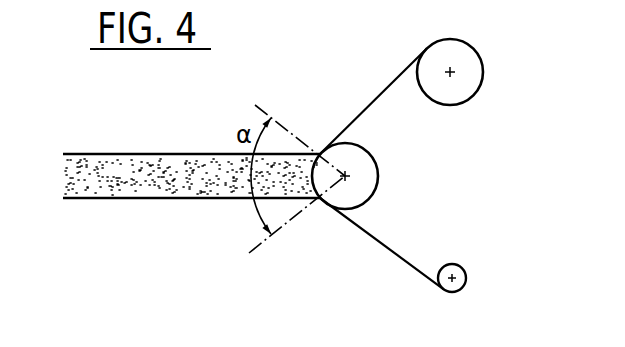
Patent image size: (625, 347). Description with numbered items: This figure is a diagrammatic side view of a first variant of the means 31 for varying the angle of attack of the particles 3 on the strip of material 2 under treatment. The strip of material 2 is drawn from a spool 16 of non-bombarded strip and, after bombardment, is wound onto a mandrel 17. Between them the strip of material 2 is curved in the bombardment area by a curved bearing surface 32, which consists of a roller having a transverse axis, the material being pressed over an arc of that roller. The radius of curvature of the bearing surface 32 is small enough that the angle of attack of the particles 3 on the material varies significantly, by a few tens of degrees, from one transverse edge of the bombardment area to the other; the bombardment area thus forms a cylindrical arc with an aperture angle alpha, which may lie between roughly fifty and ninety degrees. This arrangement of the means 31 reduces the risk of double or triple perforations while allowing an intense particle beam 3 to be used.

The strip of material 2 is at (386, 88).
The particles 3 is at (113, 172).
The spool 16 is at (473, 60).
The mandrel 17 is at (466, 274).
The means for varying the angle of attack 31 is at (313, 118).
The curved bearing surface 32 is at (307, 188).